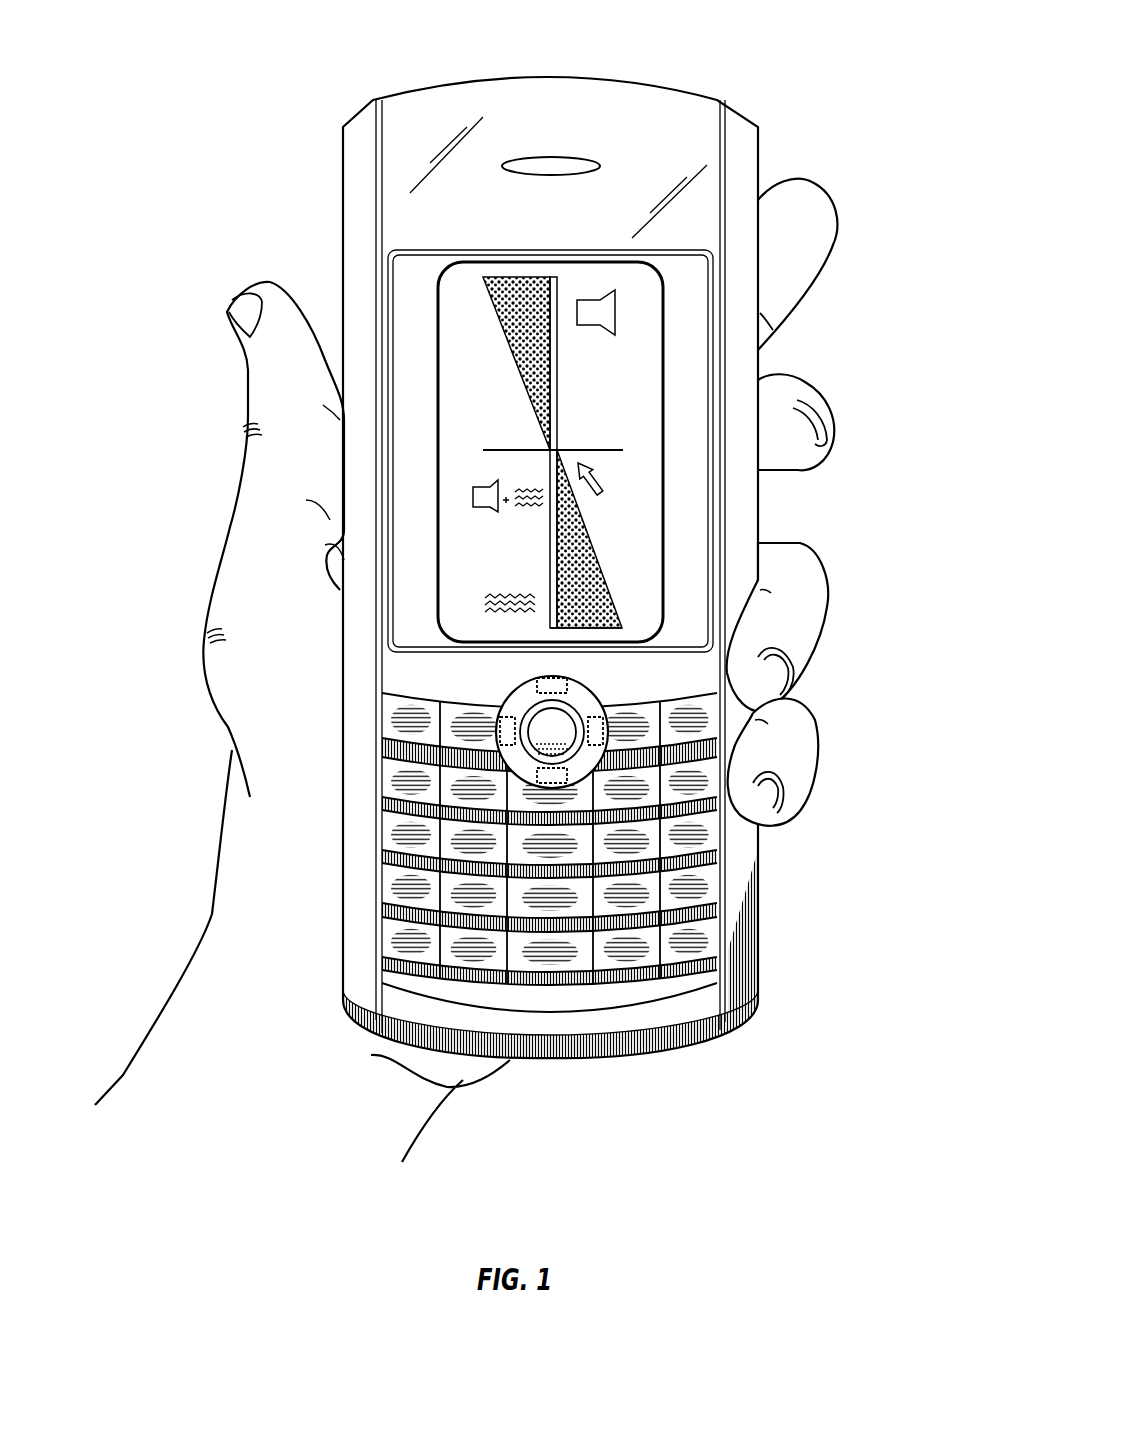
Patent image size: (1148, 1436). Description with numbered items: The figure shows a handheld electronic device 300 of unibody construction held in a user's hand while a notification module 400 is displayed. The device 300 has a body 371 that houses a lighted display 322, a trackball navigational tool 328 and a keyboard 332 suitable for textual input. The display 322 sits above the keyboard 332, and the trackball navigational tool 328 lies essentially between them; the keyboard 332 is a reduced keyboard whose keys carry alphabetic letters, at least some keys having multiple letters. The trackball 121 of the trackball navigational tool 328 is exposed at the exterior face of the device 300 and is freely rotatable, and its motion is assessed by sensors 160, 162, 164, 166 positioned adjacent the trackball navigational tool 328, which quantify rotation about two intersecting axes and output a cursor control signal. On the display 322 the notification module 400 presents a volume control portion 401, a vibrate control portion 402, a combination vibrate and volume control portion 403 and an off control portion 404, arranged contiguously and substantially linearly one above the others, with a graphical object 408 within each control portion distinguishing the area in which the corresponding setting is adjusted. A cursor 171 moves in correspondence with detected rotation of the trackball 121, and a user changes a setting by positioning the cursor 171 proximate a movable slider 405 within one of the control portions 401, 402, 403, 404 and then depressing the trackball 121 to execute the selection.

The handheld electronic device 300 is at (536, 567).
The body 371 is at (760, 142).
The lighted display 322 is at (413, 267).
The notification module 400 is at (536, 400).
The volume control portion 401 is at (517, 388).
The off control portion 404 is at (543, 442).
The combination vibrate and volume control portion 403 is at (543, 535).
The vibrate control portion 402 is at (543, 623).
The movable slider 405 is at (612, 452).
The graphical object 408 is at (613, 312).
The cursor 171 is at (598, 502).
The trackball 121 is at (473, 727).
The sensor 160 is at (550, 725).
The trackball navigational tool 328 is at (583, 685).
The sensor 166 is at (500, 738).
The sensor 162 is at (603, 738).
The sensor 164 is at (560, 779).
The keyboard 332 is at (615, 1002).